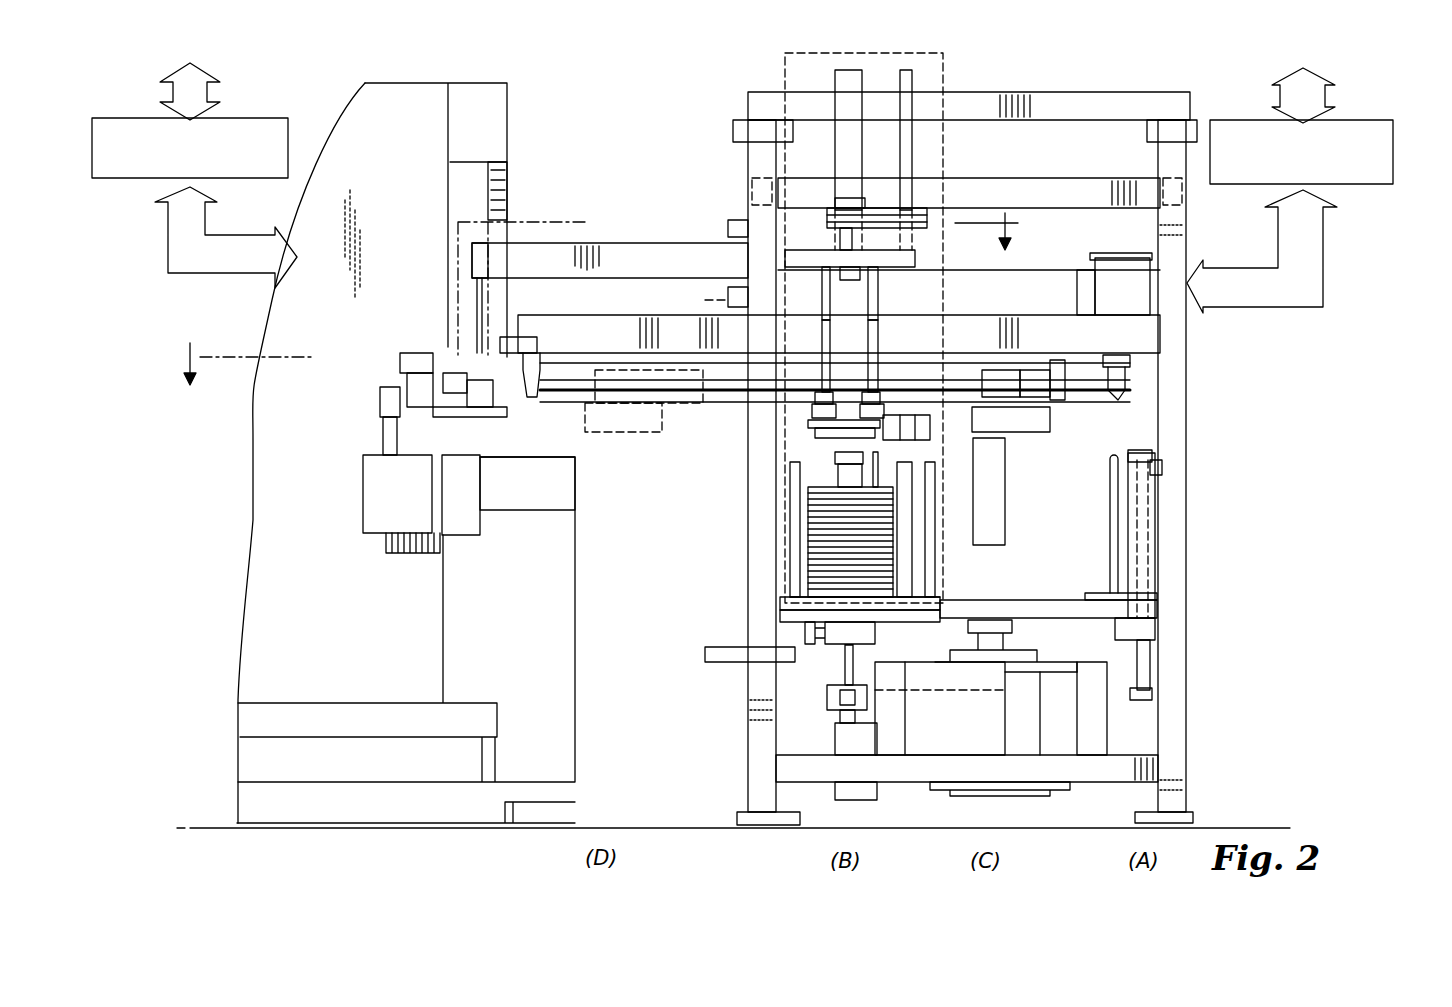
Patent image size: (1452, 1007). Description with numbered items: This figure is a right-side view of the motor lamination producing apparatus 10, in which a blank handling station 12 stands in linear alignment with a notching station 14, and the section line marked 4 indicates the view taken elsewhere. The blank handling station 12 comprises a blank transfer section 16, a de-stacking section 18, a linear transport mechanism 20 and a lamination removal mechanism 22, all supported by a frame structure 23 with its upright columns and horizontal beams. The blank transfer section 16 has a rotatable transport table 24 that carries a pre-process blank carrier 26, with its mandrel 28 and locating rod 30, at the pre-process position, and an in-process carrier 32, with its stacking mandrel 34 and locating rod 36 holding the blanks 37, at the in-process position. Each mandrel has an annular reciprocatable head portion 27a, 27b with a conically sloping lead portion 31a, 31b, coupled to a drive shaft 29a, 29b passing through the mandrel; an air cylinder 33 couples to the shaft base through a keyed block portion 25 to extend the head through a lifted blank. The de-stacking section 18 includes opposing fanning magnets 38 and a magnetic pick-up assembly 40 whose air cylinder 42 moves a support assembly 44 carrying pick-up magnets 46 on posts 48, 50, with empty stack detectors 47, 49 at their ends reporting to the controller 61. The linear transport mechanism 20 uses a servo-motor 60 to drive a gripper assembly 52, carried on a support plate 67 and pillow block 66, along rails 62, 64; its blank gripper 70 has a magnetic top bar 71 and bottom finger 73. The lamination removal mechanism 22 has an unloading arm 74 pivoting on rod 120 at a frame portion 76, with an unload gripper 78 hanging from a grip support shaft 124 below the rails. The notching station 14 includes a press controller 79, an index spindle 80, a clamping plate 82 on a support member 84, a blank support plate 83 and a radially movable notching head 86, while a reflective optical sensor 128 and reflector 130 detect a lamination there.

The motor lamination producing apparatus 10 is at (658, 76).
The blank handling station 12 is at (1129, 78).
The notching station 14 is at (372, 78).
The blank transfer section 16 is at (1115, 665).
The de-stacking section 18 is at (785, 70).
The linear transport mechanism 20 is at (697, 312).
The lamination removal mechanism 22 is at (567, 243).
The frame structure 23 is at (748, 105).
The rotatable transport table 24 is at (1110, 628).
The keyed block portion 25 is at (827, 695).
The pre-process blank carrier 26 is at (1157, 605).
The head portion 27a is at (1162, 467).
The head portion 27b is at (838, 475).
The mandrel 28 is at (1128, 524).
The drive shaft 29a is at (1164, 680).
The drive shaft 29b is at (905, 668).
The locating rod 30 is at (1110, 498).
The conically sloping lead portion 31a is at (1152, 454).
The conically sloping lead portion 31b is at (835, 458).
The in-process carrier 32 is at (805, 600).
The air cylinder 33 is at (835, 740).
The stacking mandrel 34 is at (800, 555).
The locating rod 36 is at (893, 550).
The blanks 37 is at (880, 615).
The fanning magnets 38 is at (790, 530).
The magnetic pick-up assembly 40 is at (822, 226).
The air cylinder 42 is at (838, 83).
The support assembly 44 is at (908, 259).
The pick-up magnets 46 is at (808, 424).
The empty stack detector 47 is at (815, 433).
The post 48 is at (822, 298).
The empty stack detector 49 is at (875, 395).
The post 50 is at (878, 302).
The gripper assembly 52 is at (620, 432).
The servo-motor 60 is at (1060, 280).
The controller 61 is at (1342, 120).
The rail 62 is at (1100, 357).
The rail 64 is at (1050, 388).
The pillow block 66 is at (1015, 398).
The support plate 67 is at (1058, 363).
The blank gripper 70 is at (905, 415).
The magnetic top bar 71 is at (828, 395).
The bottom finger 73 is at (878, 455).
The lamination unloading arm 74 is at (590, 255).
The frame portion 76 is at (736, 225).
The unload gripper 78 is at (453, 374).
The press controller 79 is at (256, 92).
The index spindle 80 is at (507, 414).
The clamping plate 82 is at (414, 392).
The blank support plate 83 is at (478, 464).
The support member 84 is at (507, 175).
The notching head 86 is at (384, 410).
The rod 120 is at (736, 286).
The grip support shaft 124 is at (478, 300).
The reflective optical sensor 128 is at (520, 340).
The reflector 130 is at (527, 483).
The section line 4- 4 is at (602, 313).